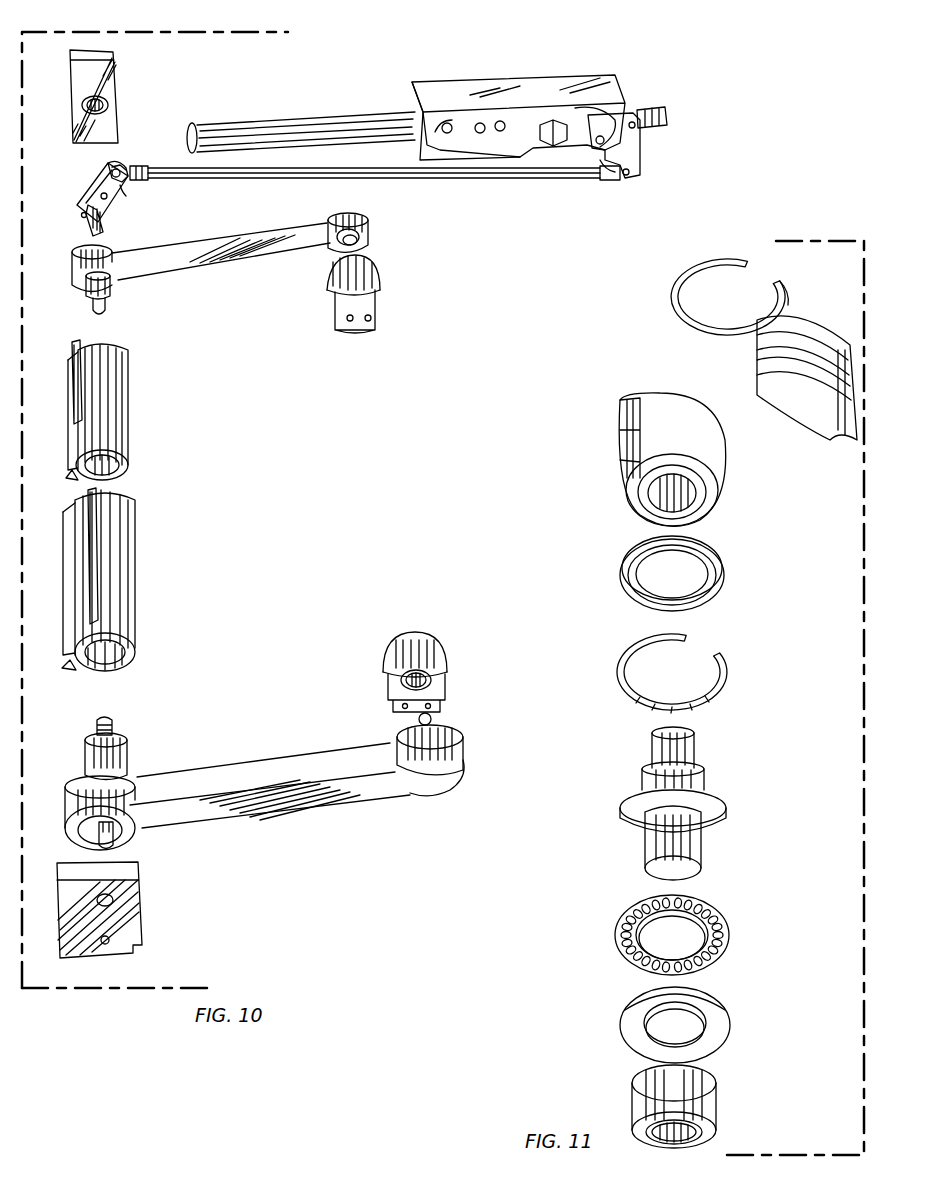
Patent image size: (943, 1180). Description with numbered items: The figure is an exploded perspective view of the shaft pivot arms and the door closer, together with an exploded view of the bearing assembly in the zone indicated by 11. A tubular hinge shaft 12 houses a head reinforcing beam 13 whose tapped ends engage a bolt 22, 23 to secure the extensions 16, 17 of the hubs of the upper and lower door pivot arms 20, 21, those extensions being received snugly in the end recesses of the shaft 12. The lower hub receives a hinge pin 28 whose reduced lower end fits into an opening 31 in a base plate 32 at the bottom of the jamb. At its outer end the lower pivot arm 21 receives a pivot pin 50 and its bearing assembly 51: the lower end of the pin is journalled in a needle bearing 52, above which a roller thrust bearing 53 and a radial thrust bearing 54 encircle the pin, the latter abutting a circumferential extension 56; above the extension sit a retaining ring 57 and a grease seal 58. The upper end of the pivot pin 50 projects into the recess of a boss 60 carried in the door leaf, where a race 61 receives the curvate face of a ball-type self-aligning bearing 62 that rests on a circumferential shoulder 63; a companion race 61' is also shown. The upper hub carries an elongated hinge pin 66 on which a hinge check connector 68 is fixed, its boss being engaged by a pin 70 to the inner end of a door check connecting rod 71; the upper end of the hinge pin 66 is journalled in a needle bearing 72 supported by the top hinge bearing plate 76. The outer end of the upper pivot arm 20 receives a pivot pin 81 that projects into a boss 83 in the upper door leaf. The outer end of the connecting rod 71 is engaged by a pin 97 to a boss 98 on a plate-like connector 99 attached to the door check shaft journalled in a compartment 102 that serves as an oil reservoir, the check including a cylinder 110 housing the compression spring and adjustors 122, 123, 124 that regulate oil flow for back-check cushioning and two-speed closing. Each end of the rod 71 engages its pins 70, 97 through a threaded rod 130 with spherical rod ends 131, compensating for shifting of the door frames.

In FIG. 10, the zone of bearing assembly 11 is at (444, 625).
In FIG. 10, the hinge shaft 12 is at (125, 405).
In FIG. 10, the head reinforcing beam 13 is at (110, 640).
In FIG. 10, the extension of upper hub 16 is at (120, 300).
In FIG. 10, the extension of lower hub 17 is at (130, 745).
In FIG. 10, the upper door pivot arm 20 is at (195, 262).
In FIG. 10, the lower door pivot arm 21 is at (235, 812).
In FIG. 10, the bolt 22 is at (100, 312).
In FIG. 10, the bolt 23 is at (113, 722).
In FIG. 10, the hinge pin 28 is at (112, 833).
In FIG. 10, the opening 31 is at (112, 900).
In FIG. 10, the base plate 32 is at (143, 918).
In FIG. 10, the pivot pin 50 is at (445, 718).
In FIG. 11, the bearing assembly 51 is at (703, 845).
In FIG. 11, the needle bearing 52 is at (720, 1100).
In FIG. 11, the roller thrust bearing 53 is at (730, 1025).
In FIG. 11, the radial thrust bearing 54 is at (728, 938).
In FIG. 11, the circumferential extension 56 is at (725, 812).
In FIG. 11, the retaining ring 57 is at (728, 663).
In FIG. 11, the grease seal 58 is at (725, 580).
In FIG. 10, the boss 60 is at (447, 655).
In FIG. 11, the race 61 is at (712, 495).
In FIG. 11, the split bushing 61' is at (764, 351).
In FIG. 11, the ball-type self-aligning bearing 62 is at (725, 462).
In FIG. 11, the circumferential shoulder 63 is at (703, 773).
In FIG. 10, the hinge pin 66 is at (90, 192).
In FIG. 10, the hinge check connector 68 is at (108, 175).
In FIG. 10, the pin 70 is at (126, 196).
In FIG. 10, the door check connecting rod 71 is at (497, 178).
In FIG. 10, the needle bearing 72 is at (108, 103).
In FIG. 10, the top hinge bearing plate 76 is at (118, 80).
In FIG. 10, the pivot pin 81 is at (365, 240).
In FIG. 10, the boss 83 is at (378, 280).
In FIG. 10, the pin 97 is at (640, 175).
In FIG. 10, the boss 98 is at (648, 160).
In FIG. 10, the connector 99 is at (645, 150).
In FIG. 10, the compartment 102 is at (590, 80).
In FIG. 10, the cylinder 110 is at (350, 118).
In FIG. 10, the adjustor 122 is at (447, 124).
In FIG. 10, the adjustor 123 is at (480, 123).
In FIG. 10, the adjustor 124 is at (500, 121).
In FIG. 10, the nut 130 is at (147, 180).
In FIG. 10, the clip 131 is at (118, 170).